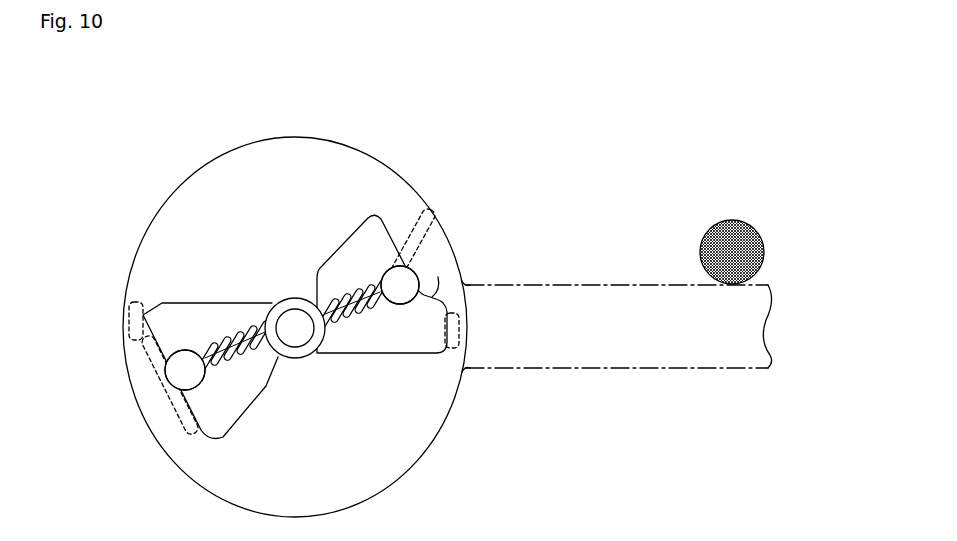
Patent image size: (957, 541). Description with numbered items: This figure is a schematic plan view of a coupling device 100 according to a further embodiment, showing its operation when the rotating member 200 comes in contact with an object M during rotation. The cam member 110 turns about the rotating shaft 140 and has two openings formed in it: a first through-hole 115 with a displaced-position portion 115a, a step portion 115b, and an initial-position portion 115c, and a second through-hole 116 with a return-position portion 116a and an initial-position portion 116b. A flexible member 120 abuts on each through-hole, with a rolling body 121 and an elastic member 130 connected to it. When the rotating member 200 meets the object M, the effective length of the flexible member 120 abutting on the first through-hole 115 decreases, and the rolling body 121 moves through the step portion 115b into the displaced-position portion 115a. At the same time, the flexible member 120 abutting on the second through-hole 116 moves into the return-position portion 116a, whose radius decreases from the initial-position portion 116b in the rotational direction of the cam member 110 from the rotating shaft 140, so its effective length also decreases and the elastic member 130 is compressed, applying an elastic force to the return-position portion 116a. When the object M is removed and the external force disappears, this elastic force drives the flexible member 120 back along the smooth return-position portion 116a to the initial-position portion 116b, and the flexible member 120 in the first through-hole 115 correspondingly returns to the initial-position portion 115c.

The coupling device 100 is at (139, 141).
The cam member 110 is at (298, 146).
The first through-hole 115 is at (340, 260).
The displaced-position portion 115a is at (417, 243).
The step portion 115b is at (440, 278).
The initial-position portion 115c is at (462, 334).
The second through-hole 116 is at (238, 410).
The return-position portion 116a is at (160, 397).
The initial-position portion 116b is at (128, 318).
The flexible member 120 is at (231, 362).
The rolling body 121 is at (182, 353).
The elastic member 130 is at (340, 334).
The rotating shaft 140 is at (297, 340).
The rotating member 200 is at (625, 294).
The object M is at (762, 248).